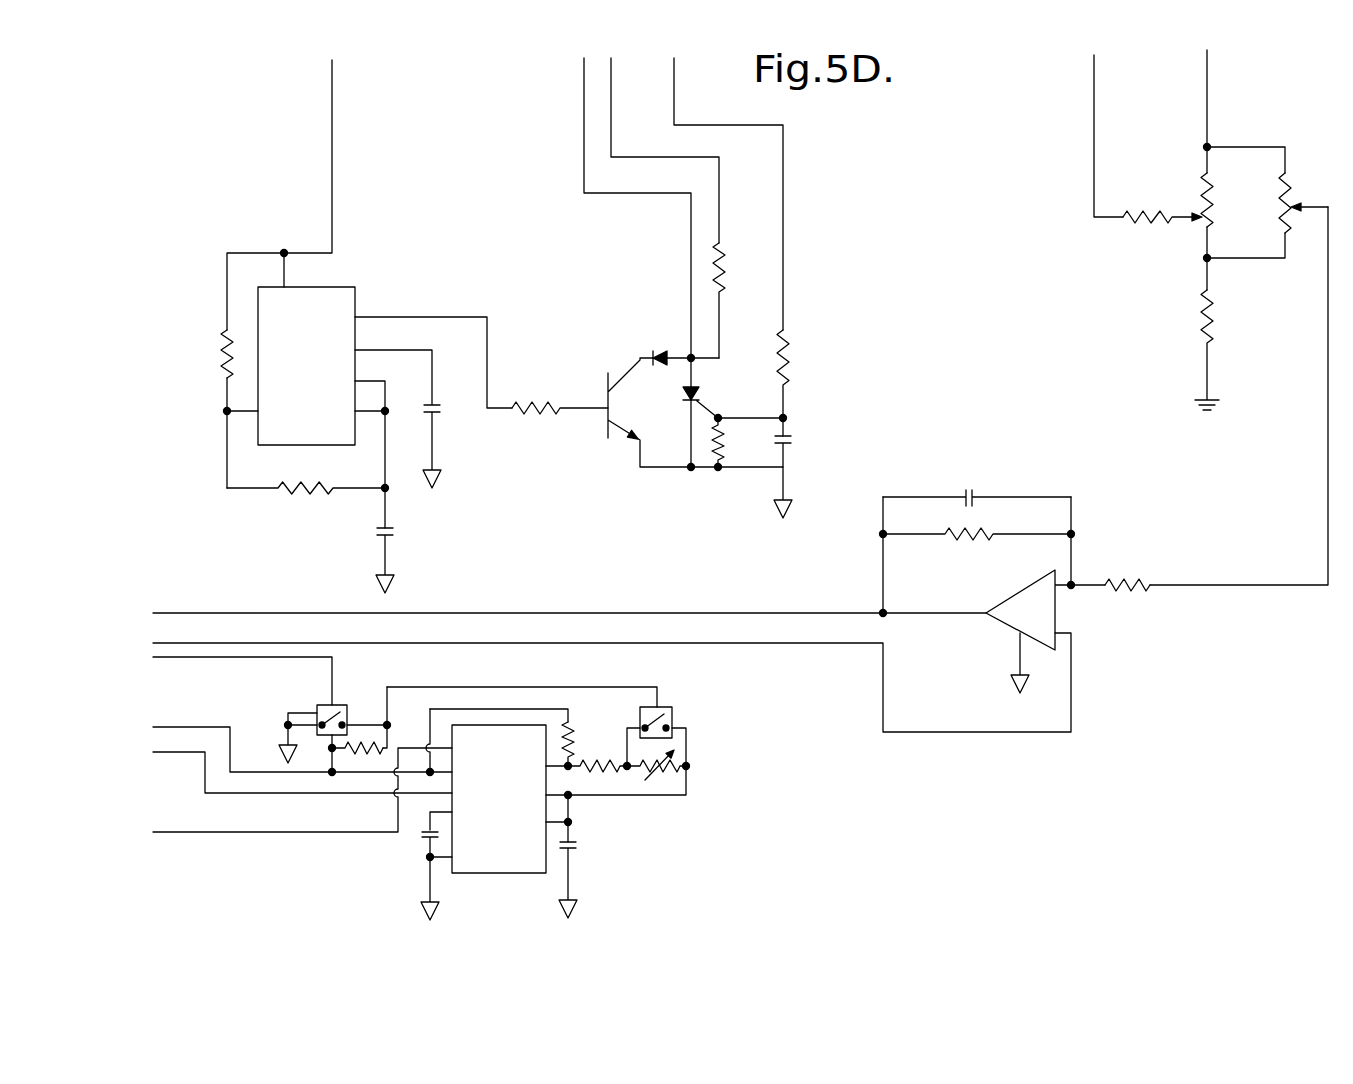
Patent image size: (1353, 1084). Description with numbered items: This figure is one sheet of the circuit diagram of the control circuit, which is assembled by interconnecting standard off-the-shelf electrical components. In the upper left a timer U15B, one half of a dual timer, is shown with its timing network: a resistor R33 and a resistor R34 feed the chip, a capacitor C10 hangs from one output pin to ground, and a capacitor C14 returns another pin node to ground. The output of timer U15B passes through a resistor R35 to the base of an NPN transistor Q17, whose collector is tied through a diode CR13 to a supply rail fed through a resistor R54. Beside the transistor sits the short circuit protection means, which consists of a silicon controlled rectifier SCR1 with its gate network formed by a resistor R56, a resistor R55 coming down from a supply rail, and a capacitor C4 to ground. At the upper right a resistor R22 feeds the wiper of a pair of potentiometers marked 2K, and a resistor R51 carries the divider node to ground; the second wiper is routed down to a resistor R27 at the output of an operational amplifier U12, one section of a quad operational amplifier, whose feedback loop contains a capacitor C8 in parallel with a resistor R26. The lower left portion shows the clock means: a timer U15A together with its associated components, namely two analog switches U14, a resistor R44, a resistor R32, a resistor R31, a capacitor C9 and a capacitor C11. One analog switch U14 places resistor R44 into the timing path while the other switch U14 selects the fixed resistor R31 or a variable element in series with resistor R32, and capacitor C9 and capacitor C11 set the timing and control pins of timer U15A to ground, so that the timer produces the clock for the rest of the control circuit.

The timer U15B is at (306, 366).
The resistor R33 is at (222, 362).
The resistor R34 is at (302, 495).
The capacitor C10 is at (439, 413).
The capacitor C14 is at (396, 532).
The resistor R35 is at (556, 400).
The NPN transistor Q17 is at (608, 409).
The diode CR13 is at (659, 352).
The silicon controlled rectifier SCR1 is at (697, 396).
The resistor R54 is at (729, 258).
The resistor R55 is at (792, 373).
The resistor R56 is at (726, 458).
The capacitor C4 is at (792, 443).
The resistor R22 is at (1150, 228).
The 2K potentiometer 2K is at (1218, 206).
The resistor R51 is at (1217, 313).
The capacitor C8 is at (969, 489).
The resistor R26 is at (972, 540).
The operational amplifier U12 is at (1045, 631).
The resistor R27 is at (1138, 579).
The analog switch U14 is at (322, 706).
The resistor R44 is at (366, 745).
The resistor R32 is at (578, 735).
The resistor R31 is at (600, 772).
The capacitor C9 is at (425, 835).
The capacitor C11 is at (580, 846).
The timer U15A is at (499, 799).